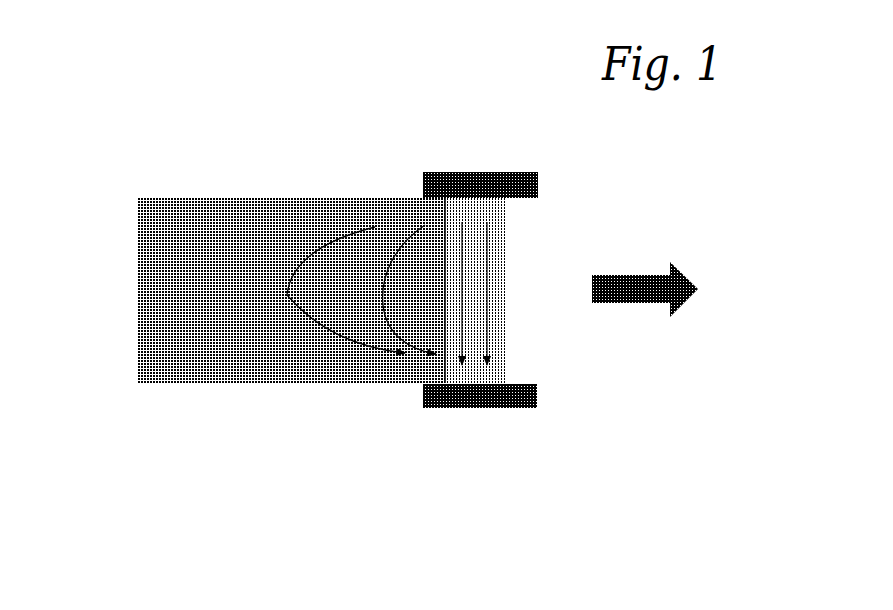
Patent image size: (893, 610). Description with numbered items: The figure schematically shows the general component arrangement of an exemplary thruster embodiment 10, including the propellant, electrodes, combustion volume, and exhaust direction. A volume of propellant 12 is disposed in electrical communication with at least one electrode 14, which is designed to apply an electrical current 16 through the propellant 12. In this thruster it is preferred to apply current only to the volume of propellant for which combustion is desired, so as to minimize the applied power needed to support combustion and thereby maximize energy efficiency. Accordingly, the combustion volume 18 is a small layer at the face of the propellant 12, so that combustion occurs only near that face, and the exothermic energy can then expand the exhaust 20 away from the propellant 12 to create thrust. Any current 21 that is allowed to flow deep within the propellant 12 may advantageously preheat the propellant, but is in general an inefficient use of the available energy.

The thruster embodiment 10 is at (144, 166).
The volume of propellant 12 is at (291, 197).
The electrode 14 is at (480, 172).
The electrical current 16 is at (425, 409).
The combustion volume 18 is at (505, 290).
The exhaust 20 is at (670, 317).
The current flowing deep within the propellant 21 is at (287, 295).